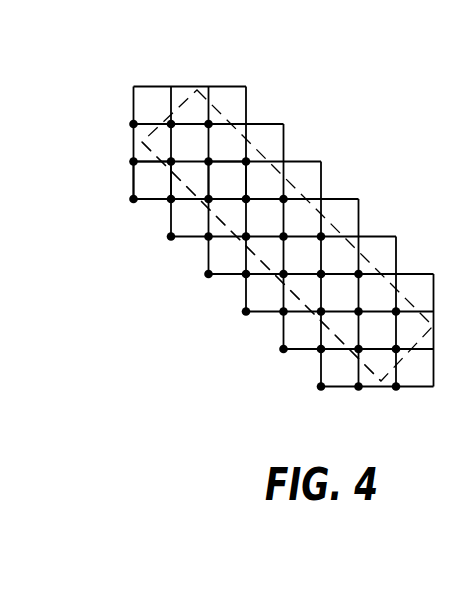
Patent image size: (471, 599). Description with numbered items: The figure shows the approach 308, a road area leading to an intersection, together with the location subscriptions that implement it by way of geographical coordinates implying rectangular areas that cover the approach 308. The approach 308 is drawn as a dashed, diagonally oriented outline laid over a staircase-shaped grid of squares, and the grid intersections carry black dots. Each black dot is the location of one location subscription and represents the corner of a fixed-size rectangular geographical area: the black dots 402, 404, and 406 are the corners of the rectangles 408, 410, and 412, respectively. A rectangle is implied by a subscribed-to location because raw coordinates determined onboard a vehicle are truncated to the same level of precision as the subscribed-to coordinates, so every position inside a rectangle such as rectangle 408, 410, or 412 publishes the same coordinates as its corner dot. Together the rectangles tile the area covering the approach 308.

The approach 308 is at (232, 112).
The black dot 402 is at (131, 200).
The black dot 404 is at (172, 201).
The black dot 406 is at (206, 201).
The rectangle 408 is at (153, 182).
The rectangle 410 is at (186, 184).
The rectangle 412 is at (227, 182).